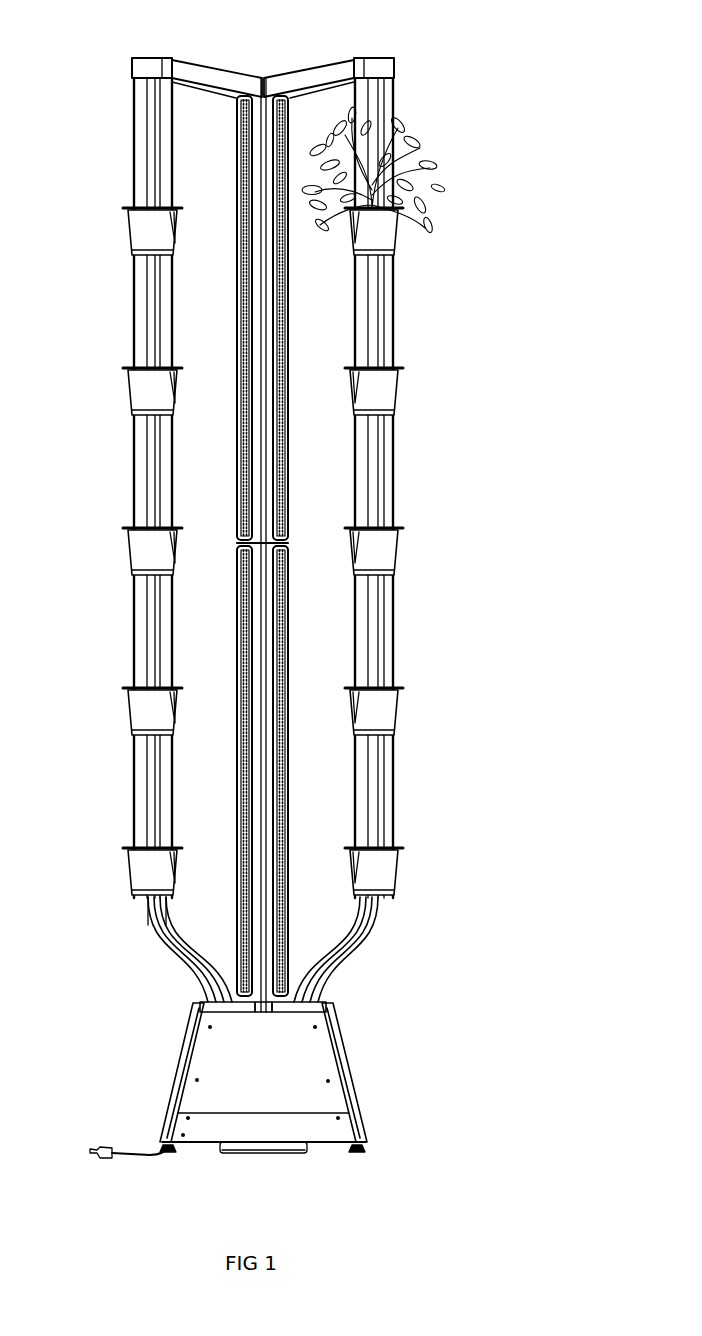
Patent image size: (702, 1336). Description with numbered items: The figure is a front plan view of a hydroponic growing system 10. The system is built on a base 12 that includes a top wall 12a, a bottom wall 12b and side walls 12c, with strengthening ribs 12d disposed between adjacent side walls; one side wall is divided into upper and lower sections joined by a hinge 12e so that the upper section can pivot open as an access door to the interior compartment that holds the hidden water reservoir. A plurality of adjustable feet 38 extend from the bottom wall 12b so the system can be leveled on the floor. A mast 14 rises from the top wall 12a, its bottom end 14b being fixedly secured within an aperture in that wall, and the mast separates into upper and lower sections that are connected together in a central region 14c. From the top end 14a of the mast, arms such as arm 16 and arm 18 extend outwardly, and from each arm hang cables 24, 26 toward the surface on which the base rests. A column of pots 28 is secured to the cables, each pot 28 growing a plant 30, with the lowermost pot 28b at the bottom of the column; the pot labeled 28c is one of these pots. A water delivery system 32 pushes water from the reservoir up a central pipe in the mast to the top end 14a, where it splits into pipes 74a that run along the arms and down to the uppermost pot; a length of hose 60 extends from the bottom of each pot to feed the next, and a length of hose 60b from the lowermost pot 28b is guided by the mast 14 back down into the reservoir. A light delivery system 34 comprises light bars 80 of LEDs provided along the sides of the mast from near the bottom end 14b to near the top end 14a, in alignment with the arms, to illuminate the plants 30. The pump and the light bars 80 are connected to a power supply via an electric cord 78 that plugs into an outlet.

The hydroponic growing system 10 is at (516, 288).
The base 12 is at (384, 1056).
The top wall 12a is at (306, 1001).
The bottom wall 12b is at (315, 1147).
The side walls 12c is at (323, 1119).
The strengthening ribs 12d is at (188, 1066).
The hinge 12e is at (238, 1113).
The mast 14 is at (259, 757).
The top end 14a is at (265, 95).
The bottom end 14b is at (264, 1006).
The central region 14c is at (291, 545).
The arm 16 is at (318, 75).
The arm 18 is at (226, 78).
The cable 24 is at (133, 318).
The cable 26 is at (173, 288).
The pot 28 is at (147, 233).
The lowermost pot 28b is at (383, 875).
The plant cup 28c is at (380, 395).
The plant 30 is at (412, 180).
The water delivery system 32 is at (170, 968).
The light delivery system 34 is at (236, 888).
The feet 38 is at (361, 1150).
The hose 60 is at (386, 474).
The hose 60b is at (199, 970).
The pipe 74a is at (153, 115).
The electric cord 78 is at (118, 1152).
The light bar 80 is at (240, 640).